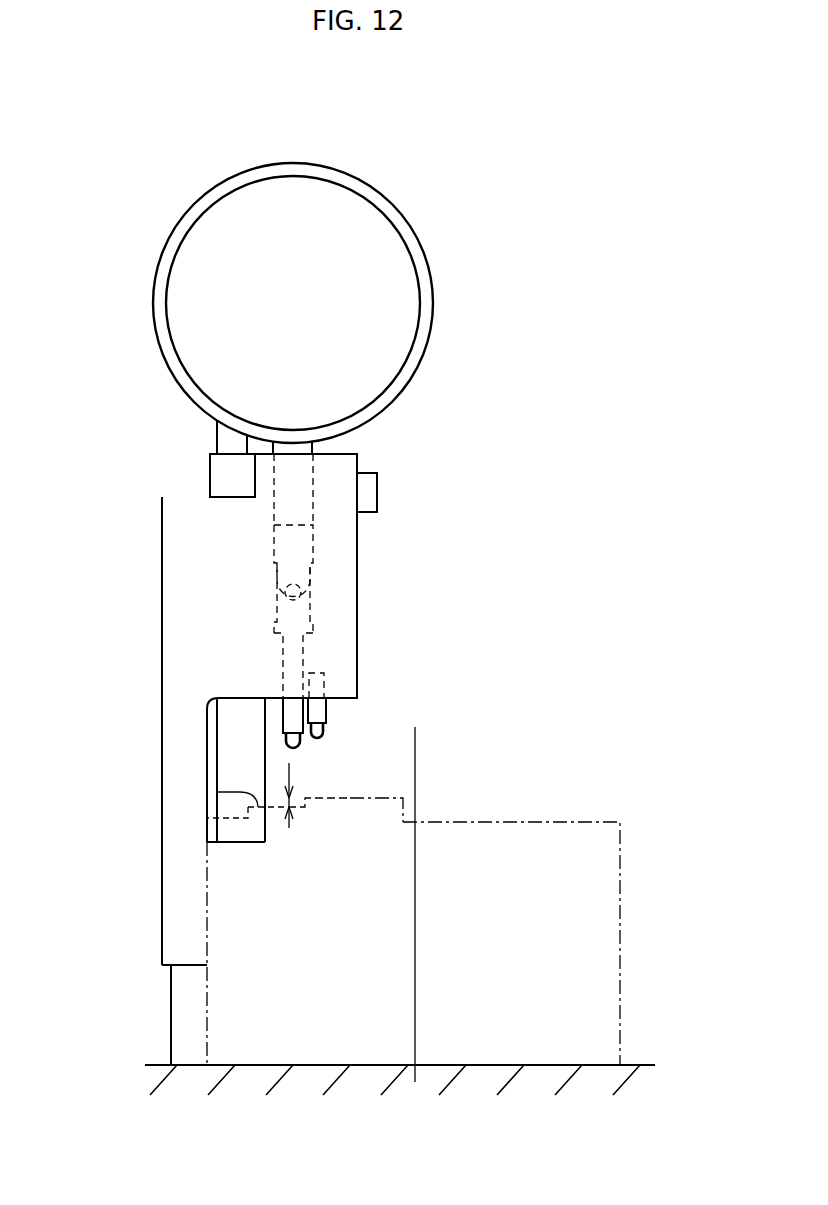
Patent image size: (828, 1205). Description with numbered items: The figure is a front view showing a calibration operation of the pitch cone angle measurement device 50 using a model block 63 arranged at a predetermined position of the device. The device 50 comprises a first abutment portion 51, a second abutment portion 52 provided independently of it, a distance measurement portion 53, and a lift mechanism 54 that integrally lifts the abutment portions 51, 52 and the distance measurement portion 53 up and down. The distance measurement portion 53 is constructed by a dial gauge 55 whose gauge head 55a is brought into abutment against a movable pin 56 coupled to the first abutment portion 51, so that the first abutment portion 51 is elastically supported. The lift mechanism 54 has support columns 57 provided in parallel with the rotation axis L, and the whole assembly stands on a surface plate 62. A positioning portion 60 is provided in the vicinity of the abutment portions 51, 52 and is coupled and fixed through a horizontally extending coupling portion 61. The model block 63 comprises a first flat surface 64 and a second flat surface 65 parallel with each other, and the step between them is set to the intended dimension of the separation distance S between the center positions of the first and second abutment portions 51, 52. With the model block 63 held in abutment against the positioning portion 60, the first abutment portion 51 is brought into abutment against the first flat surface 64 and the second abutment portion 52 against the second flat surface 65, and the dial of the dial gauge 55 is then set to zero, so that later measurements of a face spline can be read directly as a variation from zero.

The pitch cone angle measurement device 50 is at (439, 187).
The distance measurement portion 53 is at (283, 303).
The dial gauge 55 is at (390, 263).
The lift mechanism 54 is at (201, 429).
The support columns 57 is at (225, 441).
The coupling portion 61 is at (222, 478).
The gauge head 55a is at (300, 571).
The movable pin 56 is at (295, 649).
The first abutment portion 51 is at (289, 743).
The second abutment portion 52 is at (322, 733).
The positioning portion 60 is at (182, 846).
The first flat surface 64 is at (210, 791).
The second flat surface 65 is at (333, 799).
The separation distance S is at (298, 792).
The rotation axis L is at (416, 752).
The model block 63 is at (589, 788).
The surface plate 62 is at (322, 1075).